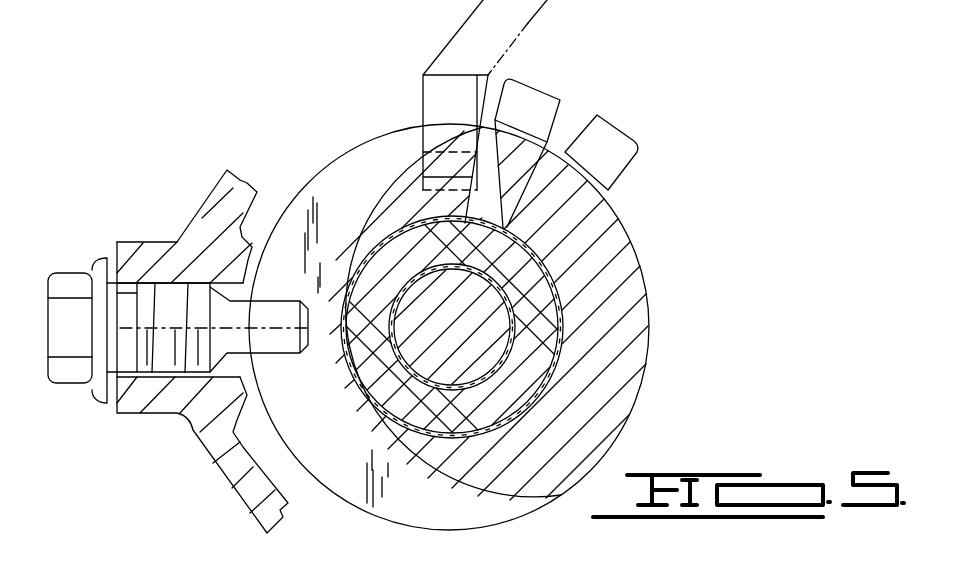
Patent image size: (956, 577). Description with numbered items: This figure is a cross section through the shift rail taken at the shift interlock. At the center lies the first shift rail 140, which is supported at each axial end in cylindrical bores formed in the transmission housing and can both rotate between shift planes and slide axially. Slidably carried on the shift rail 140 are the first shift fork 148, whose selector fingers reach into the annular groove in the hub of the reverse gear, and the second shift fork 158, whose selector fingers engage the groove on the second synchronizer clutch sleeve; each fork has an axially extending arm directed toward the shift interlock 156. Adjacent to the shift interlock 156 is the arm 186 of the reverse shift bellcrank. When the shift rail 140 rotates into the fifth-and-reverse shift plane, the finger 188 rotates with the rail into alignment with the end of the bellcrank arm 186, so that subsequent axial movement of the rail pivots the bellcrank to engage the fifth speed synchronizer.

The first shift rail 140 is at (477, 343).
The first shift fork 148 is at (543, 97).
The shift interlock mechanism 156 is at (277, 138).
The second shift fork 158 is at (618, 145).
The bellcrank arm 186 is at (457, 33).
The finger 188 is at (512, 167).